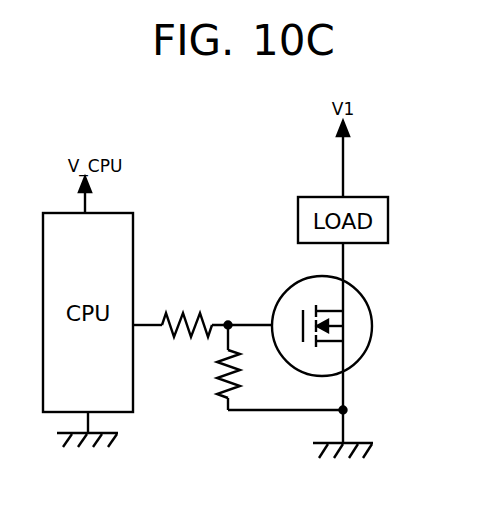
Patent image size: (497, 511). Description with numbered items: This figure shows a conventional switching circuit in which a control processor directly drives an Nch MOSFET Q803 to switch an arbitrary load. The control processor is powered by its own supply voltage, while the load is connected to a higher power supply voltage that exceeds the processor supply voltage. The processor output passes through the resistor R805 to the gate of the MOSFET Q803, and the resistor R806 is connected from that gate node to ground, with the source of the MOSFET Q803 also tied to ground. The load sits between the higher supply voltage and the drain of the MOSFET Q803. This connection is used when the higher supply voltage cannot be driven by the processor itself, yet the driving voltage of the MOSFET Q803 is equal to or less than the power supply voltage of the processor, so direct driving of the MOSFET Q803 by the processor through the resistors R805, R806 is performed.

The resistor R805 is at (193, 311).
The resistor R806 is at (206, 374).
The MOSFET Q803 is at (351, 326).